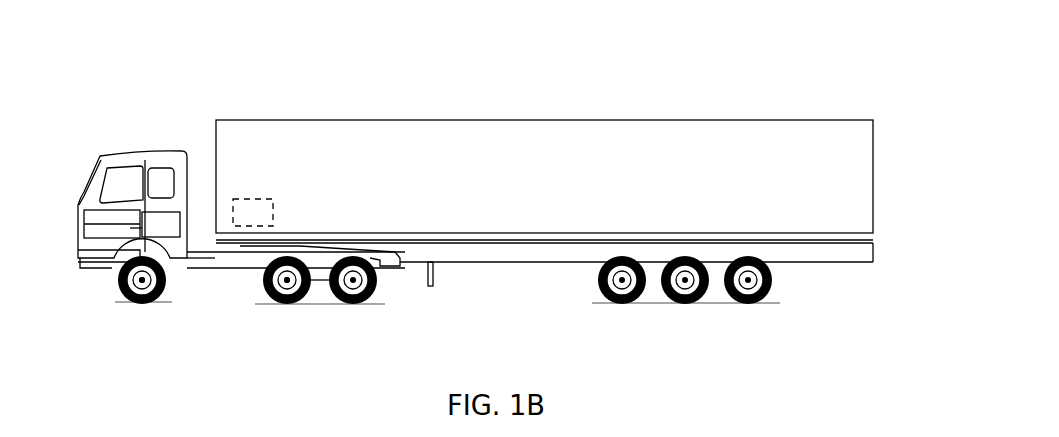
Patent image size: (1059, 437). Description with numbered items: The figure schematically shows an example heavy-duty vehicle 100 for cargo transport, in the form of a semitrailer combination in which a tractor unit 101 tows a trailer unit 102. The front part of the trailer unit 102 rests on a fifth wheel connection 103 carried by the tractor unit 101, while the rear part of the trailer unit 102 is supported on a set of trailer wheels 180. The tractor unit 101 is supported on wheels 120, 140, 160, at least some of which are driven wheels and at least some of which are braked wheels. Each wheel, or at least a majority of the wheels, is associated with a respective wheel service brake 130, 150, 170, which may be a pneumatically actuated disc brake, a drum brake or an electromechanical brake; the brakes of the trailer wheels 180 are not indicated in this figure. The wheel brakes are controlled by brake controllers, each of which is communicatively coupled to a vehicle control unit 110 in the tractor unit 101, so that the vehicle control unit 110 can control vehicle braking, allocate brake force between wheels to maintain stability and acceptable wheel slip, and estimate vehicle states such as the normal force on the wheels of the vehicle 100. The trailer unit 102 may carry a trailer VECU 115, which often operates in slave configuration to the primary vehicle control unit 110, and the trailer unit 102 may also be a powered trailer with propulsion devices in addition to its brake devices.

The vehicle 100 is at (96, 52).
The tractor unit 101 is at (123, 154).
The trailer unit 102 is at (402, 121).
The fifth wheel connection 103 is at (298, 242).
The vehicle control unit 110 is at (155, 224).
The trailer VECU 115 is at (253, 212).
The wheel 120 is at (125, 298).
The wheel service brake 130 is at (146, 288).
The wheel 140 is at (265, 294).
The wheel service brake 150 is at (290, 288).
The wheel 160 is at (333, 298).
The wheel service brake 170 is at (356, 288).
The trailer wheels 180 is at (750, 331).